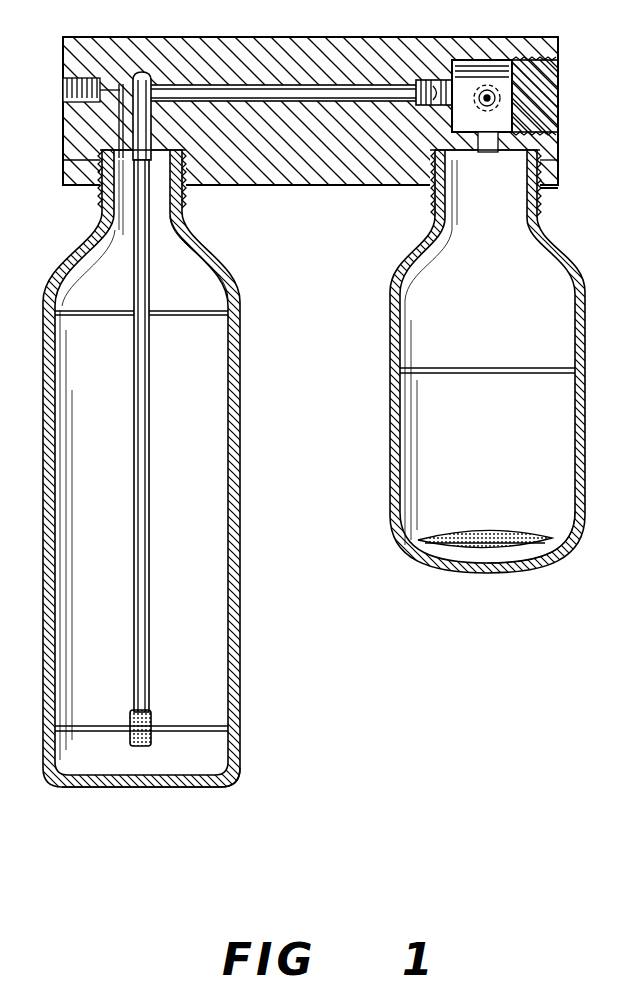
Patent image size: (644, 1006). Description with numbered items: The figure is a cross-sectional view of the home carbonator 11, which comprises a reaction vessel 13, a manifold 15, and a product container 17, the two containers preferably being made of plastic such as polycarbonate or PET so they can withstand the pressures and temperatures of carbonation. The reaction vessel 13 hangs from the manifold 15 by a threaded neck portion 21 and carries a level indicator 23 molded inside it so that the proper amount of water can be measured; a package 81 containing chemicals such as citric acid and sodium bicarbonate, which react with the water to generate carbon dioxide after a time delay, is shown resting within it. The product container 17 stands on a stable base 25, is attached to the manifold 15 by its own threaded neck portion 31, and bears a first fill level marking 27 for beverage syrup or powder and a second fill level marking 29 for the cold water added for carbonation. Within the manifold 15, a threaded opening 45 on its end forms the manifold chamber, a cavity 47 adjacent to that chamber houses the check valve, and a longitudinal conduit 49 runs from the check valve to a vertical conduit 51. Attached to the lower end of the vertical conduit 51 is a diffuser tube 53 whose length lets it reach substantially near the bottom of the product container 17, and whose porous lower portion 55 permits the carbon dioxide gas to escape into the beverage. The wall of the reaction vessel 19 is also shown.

The home carbonator 11 is at (412, 38).
The reaction vessel 13 is at (490, 574).
The manifold 15 is at (332, 38).
The product container 17 is at (235, 568).
The side wall of second container 19 is at (577, 545).
The threaded neck portion 21 is at (541, 197).
The level indicator 23 is at (578, 366).
The stable base 25 is at (233, 786).
The first fill level marking 27 is at (226, 710).
The second fill level marking 29 is at (233, 293).
The threaded neck portion 31 is at (104, 190).
The threaded opening 45 is at (235, 86).
The cavity 47 is at (540, 88).
The longitudinal conduit 49 is at (522, 60).
The vertical conduit 51 is at (149, 78).
The diffuser tube 53 is at (150, 500).
The porous lower portion 55 is at (132, 740).
The package 81 is at (462, 552).